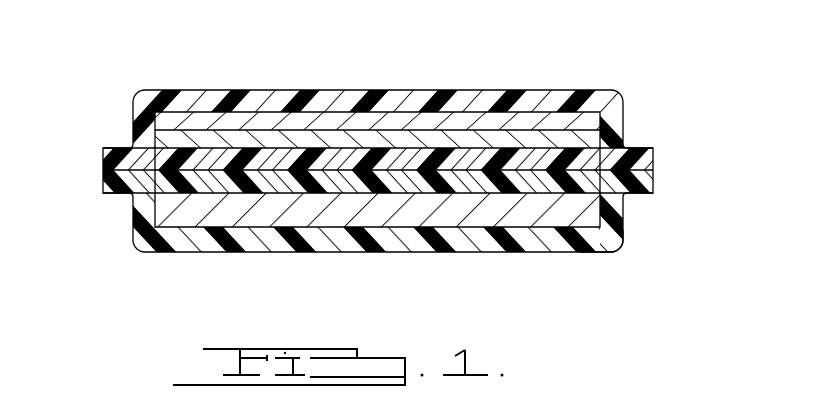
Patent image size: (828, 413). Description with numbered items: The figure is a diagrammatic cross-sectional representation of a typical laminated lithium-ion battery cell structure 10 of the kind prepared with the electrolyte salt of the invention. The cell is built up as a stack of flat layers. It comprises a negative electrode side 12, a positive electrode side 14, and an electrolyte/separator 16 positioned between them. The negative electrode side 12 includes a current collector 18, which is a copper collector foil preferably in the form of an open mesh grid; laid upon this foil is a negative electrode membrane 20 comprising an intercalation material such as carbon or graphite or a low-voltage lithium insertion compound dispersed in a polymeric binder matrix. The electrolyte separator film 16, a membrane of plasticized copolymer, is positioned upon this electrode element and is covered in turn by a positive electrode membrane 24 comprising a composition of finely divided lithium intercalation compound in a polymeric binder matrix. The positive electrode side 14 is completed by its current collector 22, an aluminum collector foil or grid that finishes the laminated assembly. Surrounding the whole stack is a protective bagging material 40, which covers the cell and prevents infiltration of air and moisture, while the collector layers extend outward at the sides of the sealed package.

The laminated battery cell structure 10 is at (640, 92).
The negative electrode side 12 is at (333, 108).
The positive electrode side 14 is at (257, 232).
The electrolyte/separator 16 is at (575, 158).
The current collector 18 is at (453, 122).
The negative electrode membrane 20 is at (157, 140).
The current collector 22 is at (160, 210).
The positive electrode membrane 24 is at (580, 188).
The protective bagging material 40 is at (592, 245).